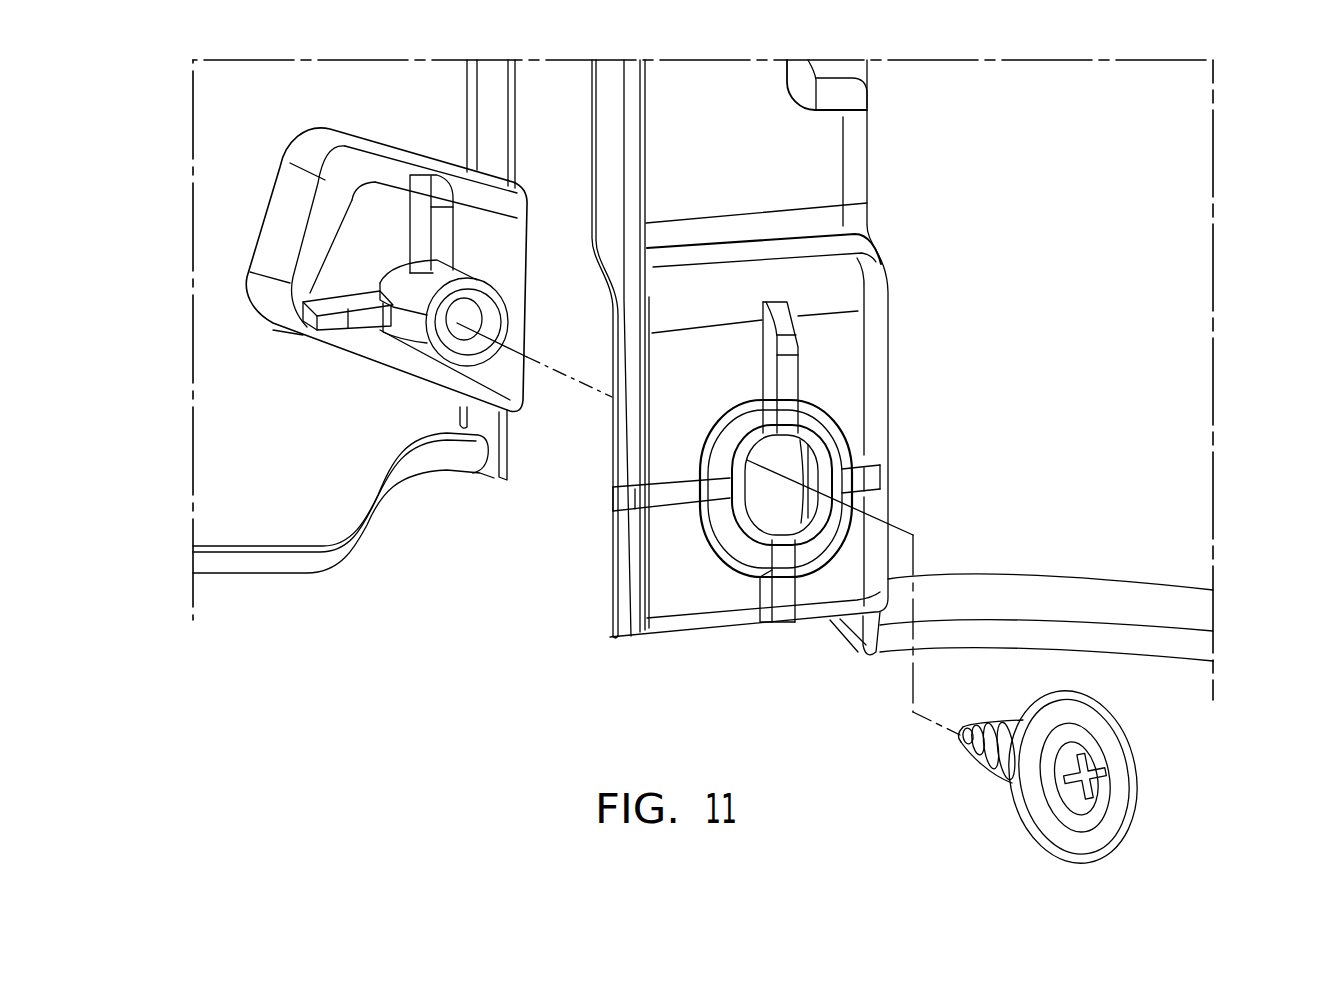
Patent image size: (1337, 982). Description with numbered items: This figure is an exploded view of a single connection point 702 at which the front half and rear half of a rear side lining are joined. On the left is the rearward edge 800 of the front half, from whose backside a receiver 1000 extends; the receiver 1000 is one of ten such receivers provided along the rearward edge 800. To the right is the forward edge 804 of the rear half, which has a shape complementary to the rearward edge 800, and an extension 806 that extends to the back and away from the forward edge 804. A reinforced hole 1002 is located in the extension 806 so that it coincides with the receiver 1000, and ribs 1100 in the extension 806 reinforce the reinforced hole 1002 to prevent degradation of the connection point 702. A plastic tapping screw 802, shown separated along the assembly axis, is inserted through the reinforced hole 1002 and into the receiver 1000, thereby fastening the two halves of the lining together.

The connection point 702 is at (438, 649).
The rearward edge 800 is at (245, 149).
The tapping screw 802 is at (1097, 790).
The forward edge 804 is at (1067, 183).
The extension 806 is at (698, 118).
The receiver 1000 is at (352, 262).
The reinforced hole 1002 is at (757, 507).
The rib 1100 is at (790, 368).